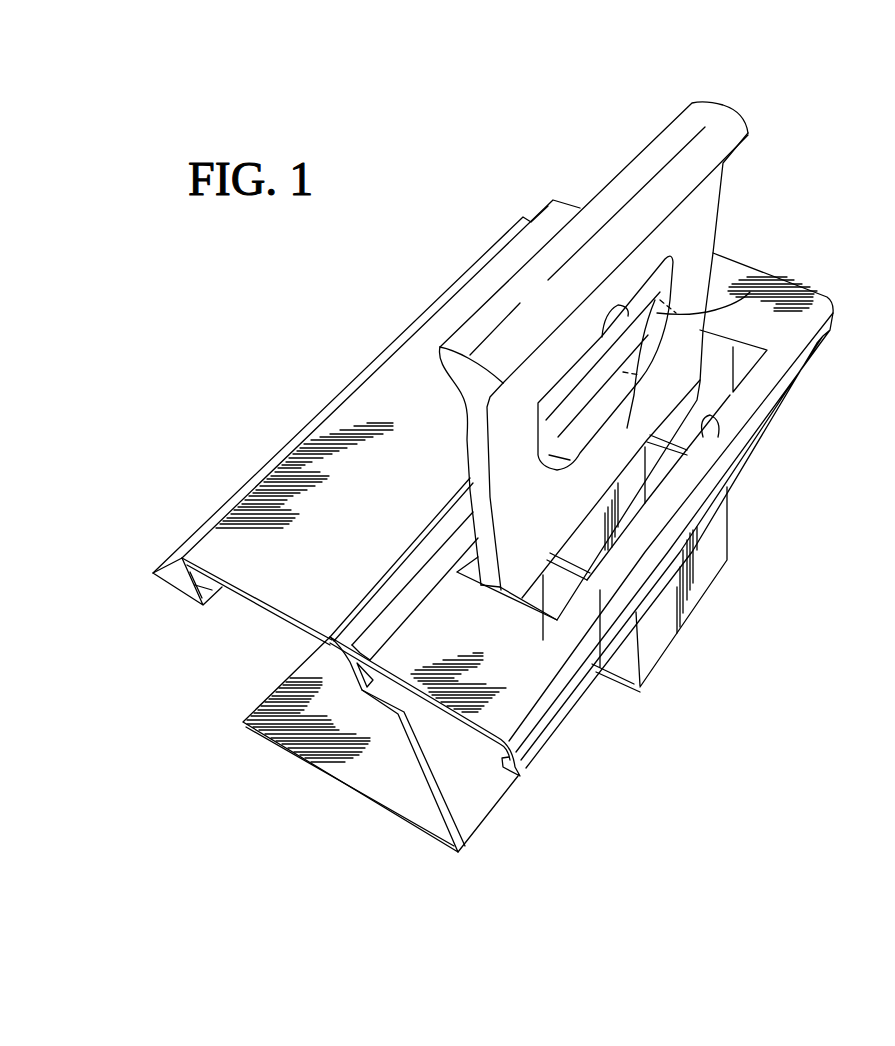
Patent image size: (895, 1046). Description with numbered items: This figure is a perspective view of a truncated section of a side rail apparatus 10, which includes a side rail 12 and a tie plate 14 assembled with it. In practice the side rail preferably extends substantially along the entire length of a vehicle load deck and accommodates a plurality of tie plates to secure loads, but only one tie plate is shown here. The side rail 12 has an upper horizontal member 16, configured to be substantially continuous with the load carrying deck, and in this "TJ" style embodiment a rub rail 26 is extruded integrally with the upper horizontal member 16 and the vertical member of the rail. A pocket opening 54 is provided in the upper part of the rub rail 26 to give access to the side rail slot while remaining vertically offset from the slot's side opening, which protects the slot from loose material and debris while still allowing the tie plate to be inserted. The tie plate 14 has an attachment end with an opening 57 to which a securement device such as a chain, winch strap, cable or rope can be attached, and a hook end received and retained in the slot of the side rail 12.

The side rail apparatus 10 is at (562, 159).
The side rail 12 is at (474, 274).
The tie plate 14 is at (721, 185).
The upper horizontal member 16 is at (293, 467).
The rub rail 26 is at (803, 295).
The pocket opening 54 is at (718, 437).
The opening 57 is at (713, 256).